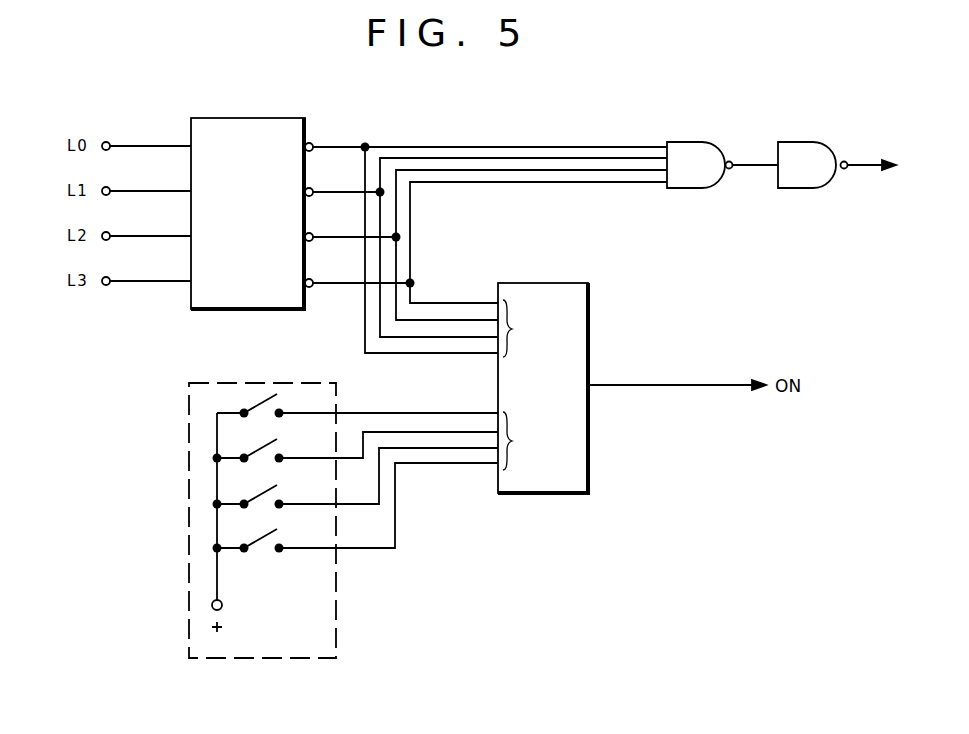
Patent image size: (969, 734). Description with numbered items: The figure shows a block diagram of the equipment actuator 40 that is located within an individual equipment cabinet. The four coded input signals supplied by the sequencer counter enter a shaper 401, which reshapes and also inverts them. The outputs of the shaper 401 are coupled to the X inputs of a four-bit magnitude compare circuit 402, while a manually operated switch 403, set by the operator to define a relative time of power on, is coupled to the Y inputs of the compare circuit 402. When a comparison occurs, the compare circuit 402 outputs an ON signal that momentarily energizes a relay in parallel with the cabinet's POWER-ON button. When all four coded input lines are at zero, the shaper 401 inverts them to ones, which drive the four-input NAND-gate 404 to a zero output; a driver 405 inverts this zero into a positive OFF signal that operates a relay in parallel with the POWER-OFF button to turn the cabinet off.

The equipment actuator 40 is at (783, 152).
The shaper 401 is at (242, 118).
The compare circuit 402 is at (588, 338).
The manually operated switch 403 is at (336, 633).
The four-input NAND-gate 404 is at (692, 190).
The driver 405 is at (813, 192).